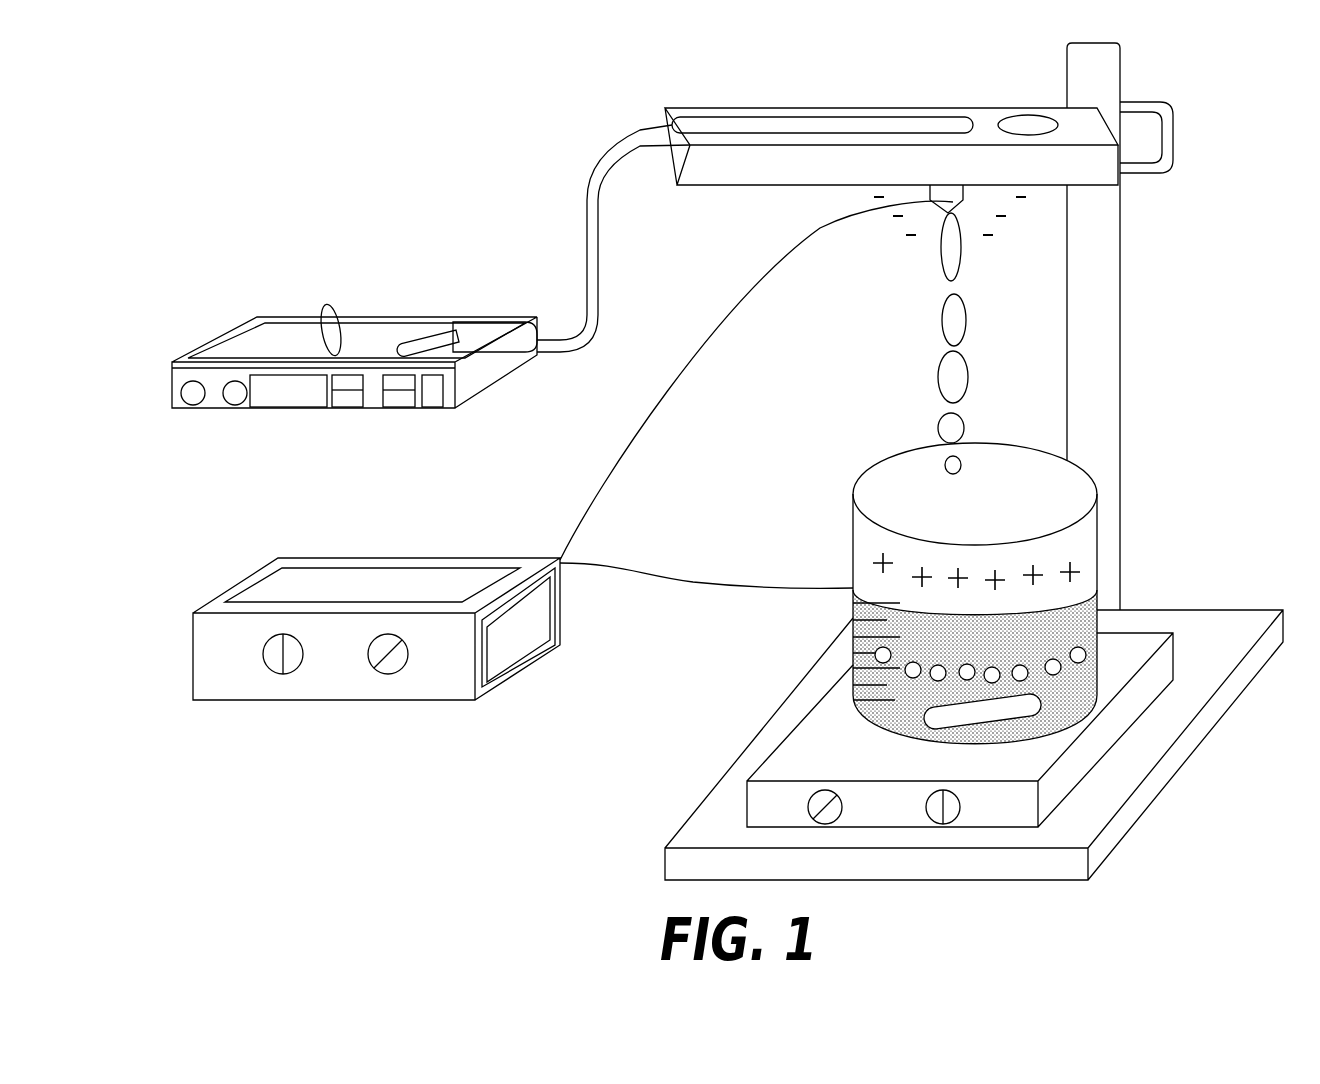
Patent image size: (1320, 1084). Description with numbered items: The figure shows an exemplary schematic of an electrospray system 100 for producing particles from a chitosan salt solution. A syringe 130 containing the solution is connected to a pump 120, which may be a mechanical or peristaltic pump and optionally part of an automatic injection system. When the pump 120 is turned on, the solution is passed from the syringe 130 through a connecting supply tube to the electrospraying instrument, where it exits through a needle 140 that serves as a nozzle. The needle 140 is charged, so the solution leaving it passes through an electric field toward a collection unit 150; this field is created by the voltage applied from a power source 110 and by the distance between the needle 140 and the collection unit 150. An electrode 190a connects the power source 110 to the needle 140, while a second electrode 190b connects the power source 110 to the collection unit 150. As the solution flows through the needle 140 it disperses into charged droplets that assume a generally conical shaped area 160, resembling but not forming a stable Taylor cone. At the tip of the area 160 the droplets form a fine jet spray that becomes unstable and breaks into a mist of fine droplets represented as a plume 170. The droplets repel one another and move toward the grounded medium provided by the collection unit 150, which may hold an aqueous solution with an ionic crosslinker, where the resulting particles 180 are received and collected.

The system 100 is at (263, 142).
The power source 110 is at (193, 655).
The pump 120 is at (173, 388).
The syringe 130 is at (383, 320).
The needle 140 is at (963, 200).
The collection unit 150 is at (853, 530).
The conical shaped area 160 is at (990, 237).
The plume 170 is at (942, 320).
The particles 180 is at (1090, 654).
The electrode 190a is at (640, 452).
The electrode 190b is at (693, 583).